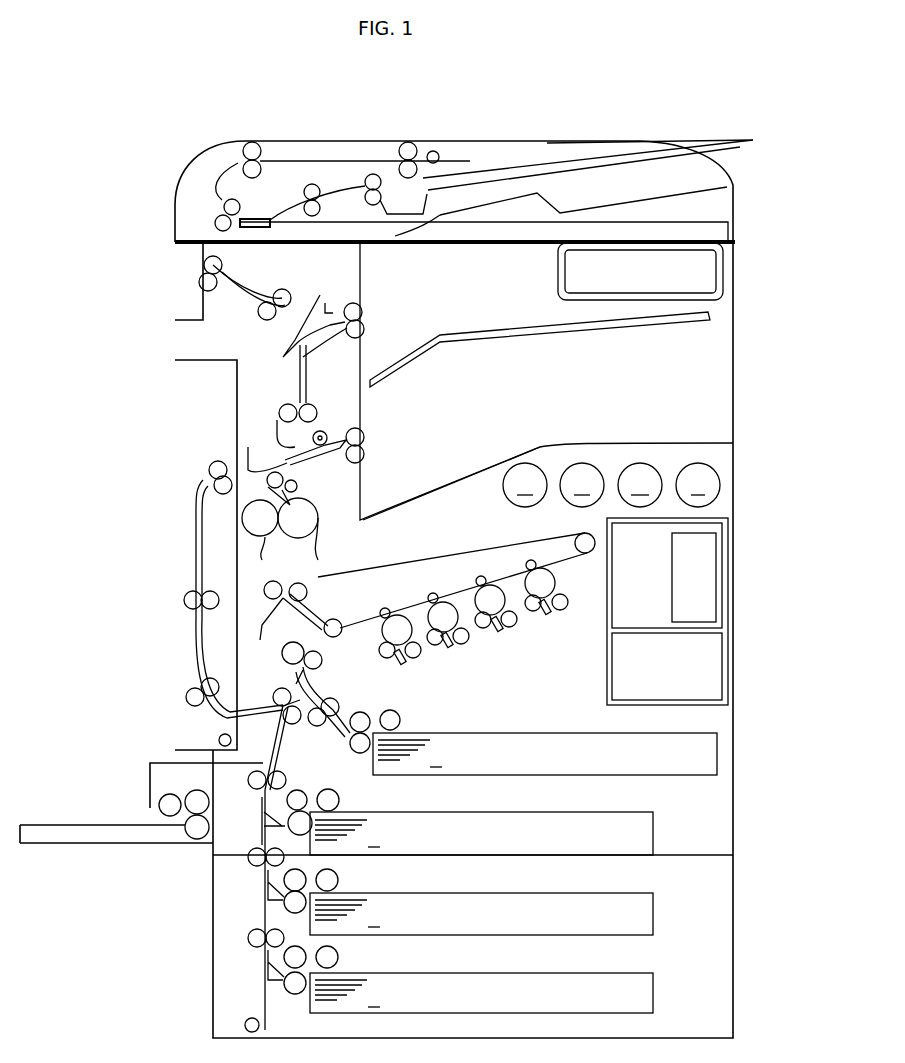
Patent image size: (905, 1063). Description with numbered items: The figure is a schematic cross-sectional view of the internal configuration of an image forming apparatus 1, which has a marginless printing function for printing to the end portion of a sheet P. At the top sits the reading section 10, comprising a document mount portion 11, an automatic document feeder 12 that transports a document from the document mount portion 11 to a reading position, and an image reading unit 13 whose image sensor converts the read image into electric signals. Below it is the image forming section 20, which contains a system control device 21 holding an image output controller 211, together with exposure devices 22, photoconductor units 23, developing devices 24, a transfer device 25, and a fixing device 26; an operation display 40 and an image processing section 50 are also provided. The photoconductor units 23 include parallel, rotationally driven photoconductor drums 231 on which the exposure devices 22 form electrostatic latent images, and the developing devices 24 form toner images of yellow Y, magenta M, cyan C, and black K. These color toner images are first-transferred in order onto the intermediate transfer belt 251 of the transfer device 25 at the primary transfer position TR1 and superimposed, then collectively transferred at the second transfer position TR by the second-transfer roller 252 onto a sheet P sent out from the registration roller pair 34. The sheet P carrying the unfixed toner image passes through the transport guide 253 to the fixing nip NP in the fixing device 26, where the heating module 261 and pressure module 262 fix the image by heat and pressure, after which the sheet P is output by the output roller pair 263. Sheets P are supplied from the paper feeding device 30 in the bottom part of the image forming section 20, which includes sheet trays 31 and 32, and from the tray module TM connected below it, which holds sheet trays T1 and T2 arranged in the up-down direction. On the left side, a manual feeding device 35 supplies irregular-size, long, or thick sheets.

The image forming apparatus 1 is at (126, 142).
The reading section 10 is at (313, 136).
The document mount portion 11 is at (521, 170).
The automatic document feeder 12 is at (292, 191).
The image reading unit 13 is at (408, 237).
The image forming section 20 is at (782, 511).
The system control device 21 is at (652, 600).
The image output controller 211 is at (707, 595).
The exposure device 22 is at (550, 616).
The photoconductor unit 23 is at (512, 595).
The photoconductor drum 231 is at (555, 585).
The developing device 24 is at (568, 612).
The transfer device 25 is at (382, 552).
The intermediate transfer belt 251 is at (428, 553).
The second-transfer roller 252 is at (295, 689).
The transport guide 253 is at (280, 545).
The fixing device 26 is at (328, 498).
The heating module 261 is at (307, 540).
The pressure module 262 is at (268, 537).
The output roller pair 263 is at (367, 448).
The paper feeding device 30 is at (405, 707).
The sheet tray 31 is at (700, 755).
The sheet tray 32 is at (640, 838).
The registration roller pair 34 is at (332, 661).
The manual feeding device 35 is at (128, 768).
The operation display 40 is at (652, 285).
The image processing section 50 is at (681, 676).
The black K is at (525, 485).
The cyan C is at (582, 485).
The magenta M is at (640, 485).
The yellow Y is at (698, 485).
The fixing nip NP is at (267, 446).
The secondary transfer position TR is at (303, 608).
The output sheet tray unit TR1 is at (492, 456).
The sheet tray T1 is at (640, 918).
The sheet tray T2 is at (640, 998).
The tray module TM is at (208, 960).
The sheet P is at (378, 874).